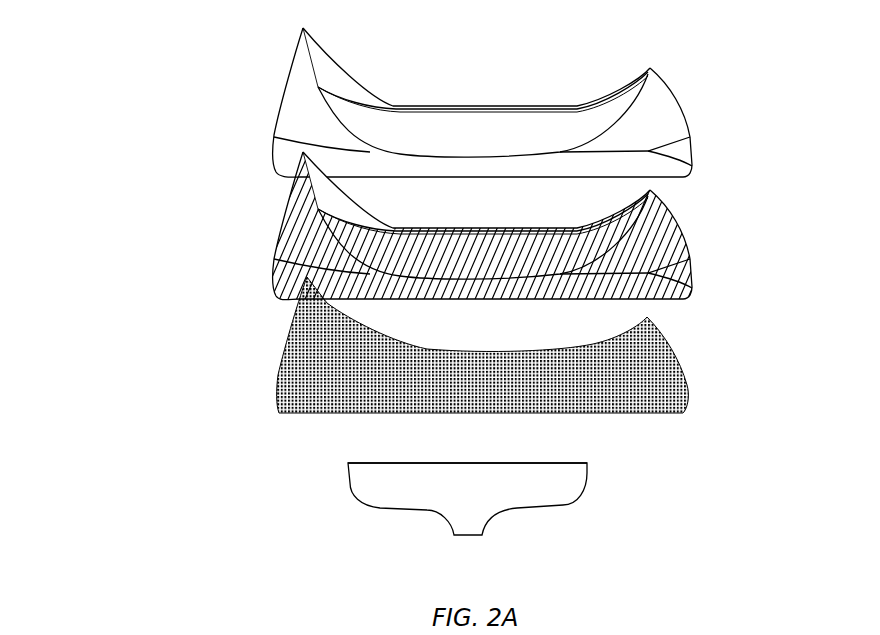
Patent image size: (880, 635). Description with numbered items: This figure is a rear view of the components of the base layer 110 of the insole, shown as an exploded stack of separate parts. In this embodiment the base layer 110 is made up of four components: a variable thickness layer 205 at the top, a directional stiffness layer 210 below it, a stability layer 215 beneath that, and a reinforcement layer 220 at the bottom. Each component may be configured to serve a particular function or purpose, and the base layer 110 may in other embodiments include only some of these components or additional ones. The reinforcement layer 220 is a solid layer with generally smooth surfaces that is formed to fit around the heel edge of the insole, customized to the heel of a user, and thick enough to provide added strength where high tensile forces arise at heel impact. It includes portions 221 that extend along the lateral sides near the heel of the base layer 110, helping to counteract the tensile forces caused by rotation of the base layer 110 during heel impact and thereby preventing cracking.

The base layer 110 is at (148, 96).
The variable thickness layer 205 is at (690, 130).
The directional stiffness layer 210 is at (690, 257).
The stability layer 215 is at (688, 375).
The reinforcement layer 220 is at (482, 498).
The portions 221 is at (588, 472).